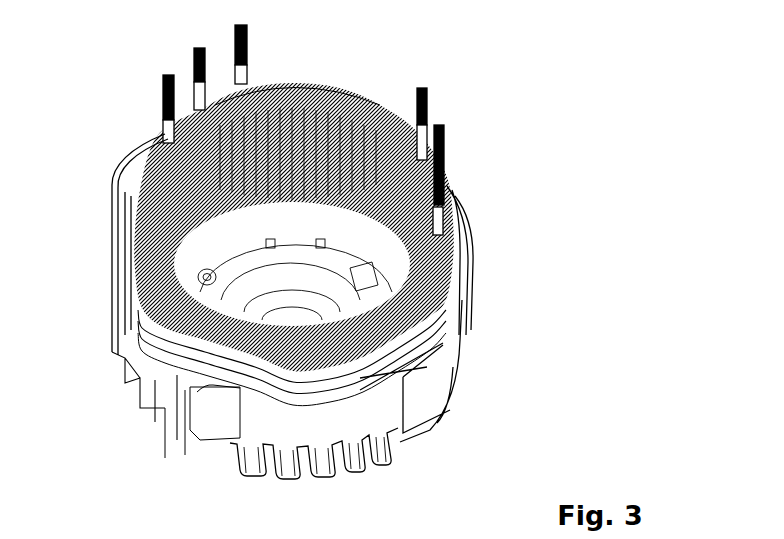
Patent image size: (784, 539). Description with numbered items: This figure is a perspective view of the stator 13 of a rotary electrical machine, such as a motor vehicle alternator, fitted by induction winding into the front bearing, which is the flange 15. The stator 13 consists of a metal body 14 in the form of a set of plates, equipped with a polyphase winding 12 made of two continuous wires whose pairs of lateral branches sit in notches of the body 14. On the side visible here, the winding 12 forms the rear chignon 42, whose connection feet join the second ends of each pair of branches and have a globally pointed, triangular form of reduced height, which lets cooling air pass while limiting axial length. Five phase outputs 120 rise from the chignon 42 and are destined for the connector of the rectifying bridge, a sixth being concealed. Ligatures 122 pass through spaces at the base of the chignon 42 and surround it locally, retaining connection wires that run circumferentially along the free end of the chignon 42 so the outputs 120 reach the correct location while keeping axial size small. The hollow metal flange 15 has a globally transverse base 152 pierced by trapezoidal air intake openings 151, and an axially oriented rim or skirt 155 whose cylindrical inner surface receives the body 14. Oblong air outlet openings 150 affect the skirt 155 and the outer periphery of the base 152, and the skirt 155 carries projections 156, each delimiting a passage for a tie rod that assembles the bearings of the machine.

The winding 12 is at (392, 90).
The stator 13 is at (110, 202).
The body 14 is at (200, 372).
The flange 15 is at (471, 356).
The rear chignon 42 is at (307, 85).
The phase outputs 120 is at (243, 85).
The ligatures 122 is at (387, 98).
The air outlet openings 150 is at (287, 472).
The air intake openings 151 is at (205, 268).
The base 152 is at (380, 262).
The skirt 155 is at (367, 413).
The projections 156 is at (200, 418).